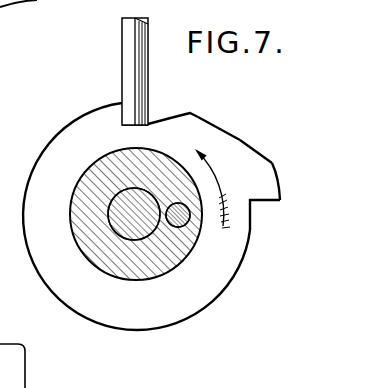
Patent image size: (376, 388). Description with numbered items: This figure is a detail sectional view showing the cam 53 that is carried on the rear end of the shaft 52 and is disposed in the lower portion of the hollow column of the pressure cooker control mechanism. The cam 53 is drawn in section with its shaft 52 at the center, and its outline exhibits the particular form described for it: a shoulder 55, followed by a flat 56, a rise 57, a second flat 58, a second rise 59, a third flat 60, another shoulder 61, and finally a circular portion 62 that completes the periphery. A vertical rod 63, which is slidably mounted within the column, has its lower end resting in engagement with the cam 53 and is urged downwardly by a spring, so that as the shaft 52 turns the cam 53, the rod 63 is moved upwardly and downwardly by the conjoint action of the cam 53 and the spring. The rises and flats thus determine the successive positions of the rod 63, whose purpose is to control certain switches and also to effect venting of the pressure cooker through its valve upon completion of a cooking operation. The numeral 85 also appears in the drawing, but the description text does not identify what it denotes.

The shaft 52 is at (128, 216).
The cam 53 is at (62, 142).
The shoulder 55 is at (122, 115).
The flat 56 is at (132, 127).
The rise 57 is at (183, 113).
The second flat 58 is at (205, 120).
The second rise 59 is at (251, 145).
The third flat 60 is at (281, 190).
The shoulder 61 is at (263, 203).
The circular portion 62 is at (140, 330).
The vertical rod 63 is at (128, 42).
The housing 85 is at (0, 317).